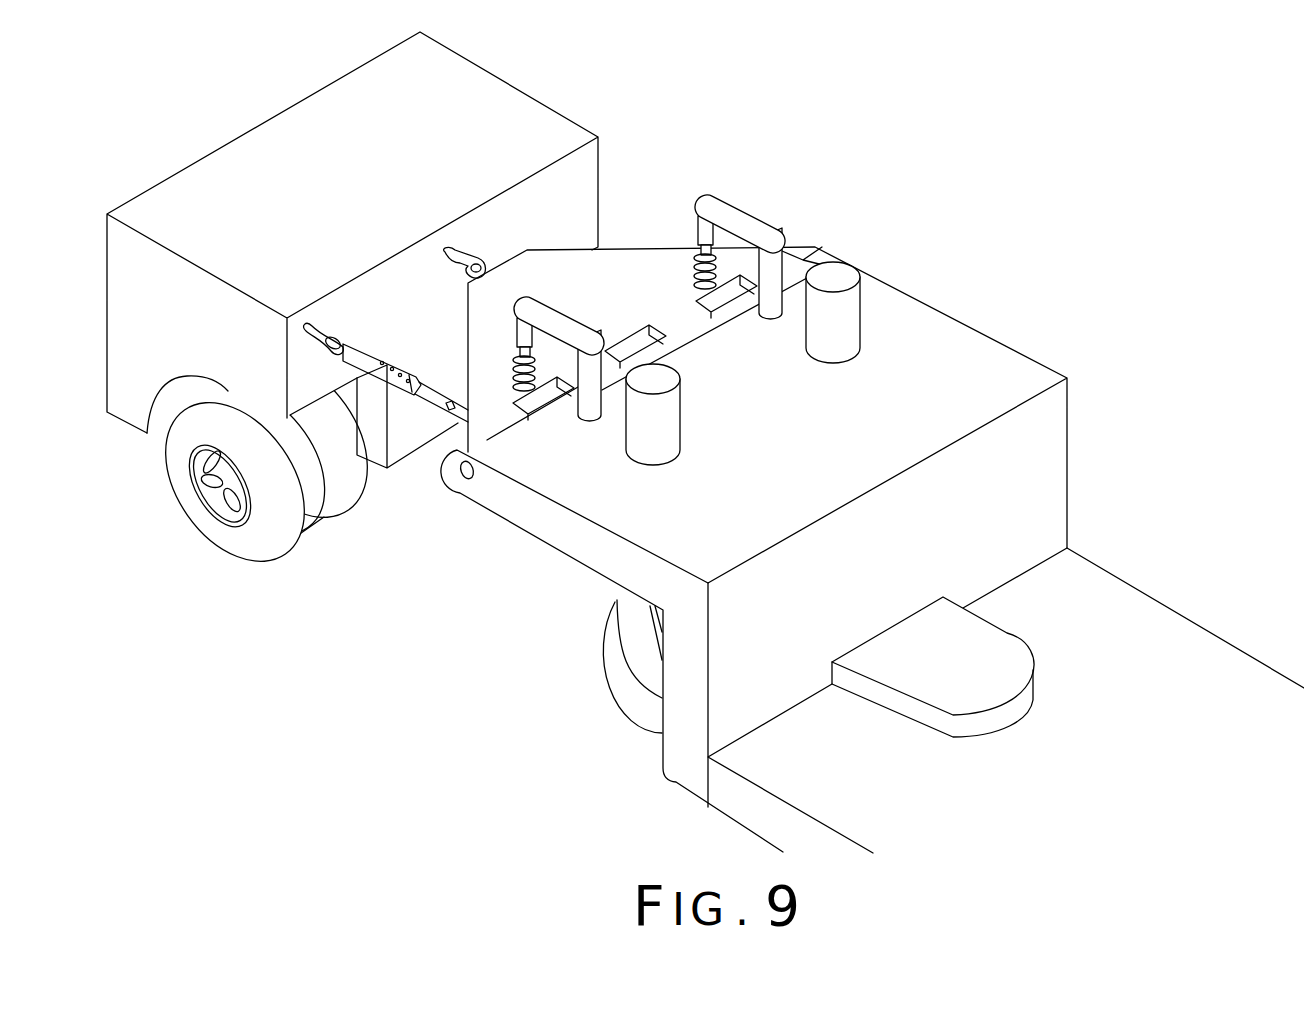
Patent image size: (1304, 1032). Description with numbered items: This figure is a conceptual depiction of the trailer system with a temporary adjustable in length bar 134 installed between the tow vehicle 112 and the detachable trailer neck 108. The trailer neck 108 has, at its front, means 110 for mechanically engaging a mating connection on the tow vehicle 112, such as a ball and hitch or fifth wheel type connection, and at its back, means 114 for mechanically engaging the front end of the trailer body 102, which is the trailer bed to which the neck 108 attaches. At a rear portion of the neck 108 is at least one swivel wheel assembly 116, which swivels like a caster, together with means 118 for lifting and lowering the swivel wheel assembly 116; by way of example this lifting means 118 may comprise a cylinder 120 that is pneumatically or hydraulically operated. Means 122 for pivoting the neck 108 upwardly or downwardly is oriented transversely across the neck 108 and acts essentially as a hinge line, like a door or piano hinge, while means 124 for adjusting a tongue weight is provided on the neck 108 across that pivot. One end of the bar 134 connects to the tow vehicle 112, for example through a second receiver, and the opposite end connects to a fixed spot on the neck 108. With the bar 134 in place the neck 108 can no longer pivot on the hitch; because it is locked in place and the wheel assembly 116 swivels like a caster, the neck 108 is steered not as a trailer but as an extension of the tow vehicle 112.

The trailer body 102 is at (1156, 698).
The trailer neck 108 is at (866, 592).
The means for mechanically engaging a mating connection on a tow vehicle 110 is at (480, 256).
The tow vehicle 112 is at (371, 186).
The means for mechanically engaging a front end of the trailer body 114 is at (988, 652).
The swivel wheel assembly 116 is at (625, 676).
The means for lifting and lowering the swivel wheel assembly 118 is at (878, 332).
The cylinder 120 is at (665, 382).
The means for pivoting the neck upwardly or downwardly 122 is at (647, 353).
The means for adjusting a tongue weight 124 is at (576, 302).
The temporary adjustable in length bar 134 is at (402, 393).